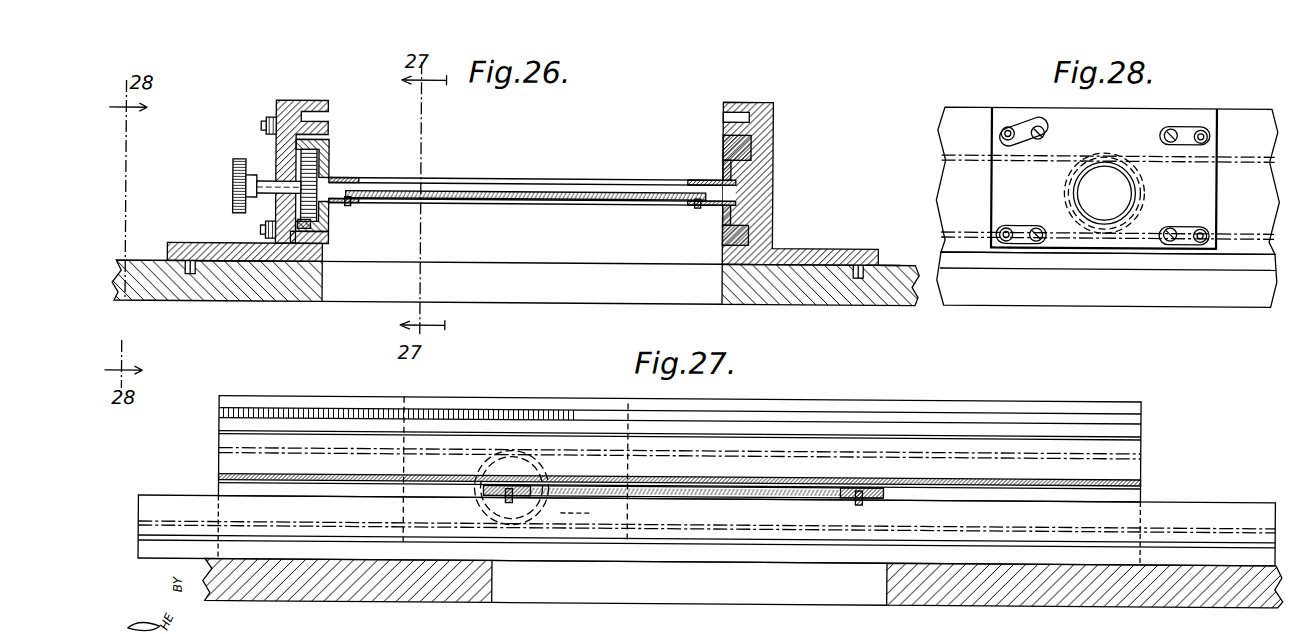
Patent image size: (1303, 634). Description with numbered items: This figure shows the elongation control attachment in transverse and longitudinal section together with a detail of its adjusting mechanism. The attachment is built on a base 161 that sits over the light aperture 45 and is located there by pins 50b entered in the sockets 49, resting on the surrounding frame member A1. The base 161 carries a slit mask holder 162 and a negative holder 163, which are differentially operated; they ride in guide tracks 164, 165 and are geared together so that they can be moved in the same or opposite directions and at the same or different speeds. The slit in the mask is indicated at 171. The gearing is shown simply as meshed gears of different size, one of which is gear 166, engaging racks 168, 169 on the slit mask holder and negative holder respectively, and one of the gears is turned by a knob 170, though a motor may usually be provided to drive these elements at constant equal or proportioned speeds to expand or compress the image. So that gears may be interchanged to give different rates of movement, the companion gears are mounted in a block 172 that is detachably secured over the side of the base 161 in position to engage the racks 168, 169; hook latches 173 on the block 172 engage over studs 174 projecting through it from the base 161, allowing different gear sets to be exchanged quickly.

In FIG. 26, the light aperture 45 is at (653, 285).
In FIG. 27, the light aperture 45 is at (724, 588).
In FIG. 26, the sockets 49 is at (211, 263).
In FIG. 26, the pins 50b is at (857, 274).
In FIG. 26, the frame member A1 is at (892, 262).
In FIG. 27, the frame member A1 is at (1053, 583).
In FIG. 28, the frame member A1 is at (1117, 292).
In FIG. 26, the base 161 is at (762, 193).
In FIG. 27, the base 161 is at (1140, 486).
In FIG. 28, the base 161 is at (942, 168).
In FIG. 26, the slit mask holder 162 is at (592, 176).
In FIG. 27, the slit mask holder 162 is at (812, 473).
In FIG. 26, the negative holder 163 is at (322, 243).
In FIG. 27, the negative holder 163 is at (812, 497).
In FIG. 26, the guide track 164 is at (747, 145).
In FIG. 26, the guide track 165 is at (748, 231).
In FIG. 26, the gear 166 is at (307, 175).
In FIG. 27, the gear 166 is at (557, 443).
In FIG. 28, the gear 166 is at (1143, 203).
In FIG. 26, the rack 168 is at (322, 141).
In FIG. 27, the rack 168 is at (472, 448).
In FIG. 28, the rack 168 is at (1038, 160).
In FIG. 26, the rack 169 is at (322, 225).
In FIG. 27, the rack 169 is at (566, 520).
In FIG. 28, the rack 169 is at (955, 235).
In FIG. 26, the knob 170 is at (247, 151).
In FIG. 28, the knob 170 is at (1107, 193).
In FIG. 26, the slit 171 is at (517, 176).
In FIG. 27, the slit 171 is at (693, 478).
In FIG. 26, the block 172 is at (292, 99).
In FIG. 27, the block 172 is at (430, 410).
In FIG. 28, the block 172 is at (1140, 125).
In FIG. 26, the hook latch 173 is at (272, 120).
In FIG. 28, the hook latch 173 is at (1029, 113).
In FIG. 26, the stud 174 is at (262, 125).
In FIG. 28, the stud 174 is at (1002, 135).